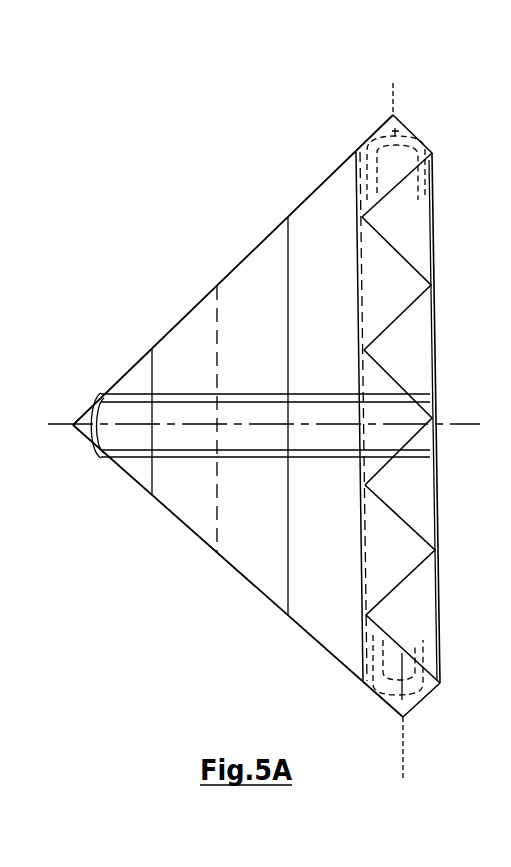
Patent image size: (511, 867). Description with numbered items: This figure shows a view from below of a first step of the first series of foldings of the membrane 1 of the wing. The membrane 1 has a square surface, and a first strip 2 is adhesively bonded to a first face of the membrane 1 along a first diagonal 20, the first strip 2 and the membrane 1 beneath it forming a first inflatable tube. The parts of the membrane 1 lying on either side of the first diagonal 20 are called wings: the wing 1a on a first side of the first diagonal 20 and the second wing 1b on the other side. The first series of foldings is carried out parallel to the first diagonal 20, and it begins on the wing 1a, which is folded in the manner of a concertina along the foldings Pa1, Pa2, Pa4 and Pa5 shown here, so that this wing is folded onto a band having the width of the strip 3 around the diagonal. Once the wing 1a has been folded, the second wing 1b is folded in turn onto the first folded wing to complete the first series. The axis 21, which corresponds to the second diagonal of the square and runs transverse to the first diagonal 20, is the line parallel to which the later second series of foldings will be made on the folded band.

The membrane 1 is at (257, 623).
The wing 1a is at (418, 595).
The second wing 1b is at (183, 508).
The first strip 2 is at (125, 417).
The strip 3 is at (375, 688).
The first diagonal 20 is at (393, 88).
The axis 21 is at (73, 427).
The folding Pa1 is at (432, 187).
The folding Pa2 is at (357, 262).
The folding Pa4 is at (432, 327).
The folding Pa5 is at (363, 380).